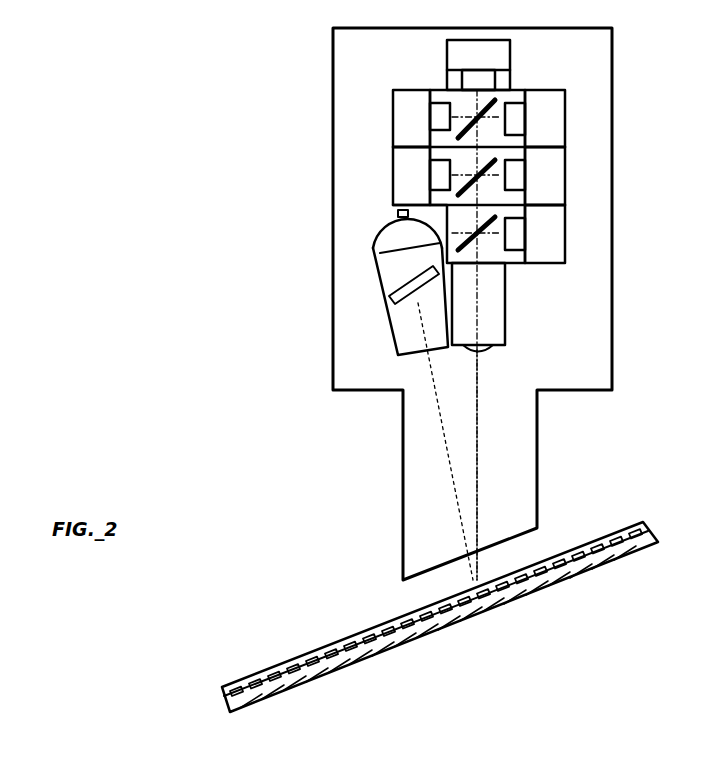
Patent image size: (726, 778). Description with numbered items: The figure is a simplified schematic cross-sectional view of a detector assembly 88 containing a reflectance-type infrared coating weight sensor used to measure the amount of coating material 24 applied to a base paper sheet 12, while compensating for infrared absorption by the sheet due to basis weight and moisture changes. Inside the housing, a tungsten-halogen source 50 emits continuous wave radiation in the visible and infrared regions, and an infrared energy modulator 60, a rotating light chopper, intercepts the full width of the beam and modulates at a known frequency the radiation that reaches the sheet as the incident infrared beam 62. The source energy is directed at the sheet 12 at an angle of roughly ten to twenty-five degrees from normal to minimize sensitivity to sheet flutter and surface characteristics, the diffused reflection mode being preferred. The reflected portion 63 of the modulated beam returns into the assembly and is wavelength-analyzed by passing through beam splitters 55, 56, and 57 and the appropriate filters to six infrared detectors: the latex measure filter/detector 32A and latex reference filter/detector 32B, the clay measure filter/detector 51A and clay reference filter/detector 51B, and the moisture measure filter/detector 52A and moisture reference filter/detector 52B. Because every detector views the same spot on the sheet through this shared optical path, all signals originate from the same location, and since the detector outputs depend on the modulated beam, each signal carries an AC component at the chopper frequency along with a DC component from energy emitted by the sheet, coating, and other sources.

The base paper sheet 12 is at (440, 617).
The coating material 24 is at (345, 645).
The latex measure filter/detector 32A is at (498, 62).
The latex reference filter/detector 32B is at (573, 112).
The tungsten-halogen source 50 is at (363, 282).
The clay measure filter/detector 51A is at (565, 183).
The clay reference filter/detector 51B is at (560, 238).
The moisture measure filter/detector 52A is at (400, 110).
The moisture reference filter/detector 52B is at (397, 170).
The beam splitter 55 is at (472, 222).
The beam splitter 56 is at (472, 165).
The beam splitter 57 is at (470, 110).
The infrared energy modulator 60 is at (385, 315).
The incident infrared beam 62 is at (447, 445).
The reflected portion 63 is at (477, 460).
The detector assembly 88 is at (612, 332).